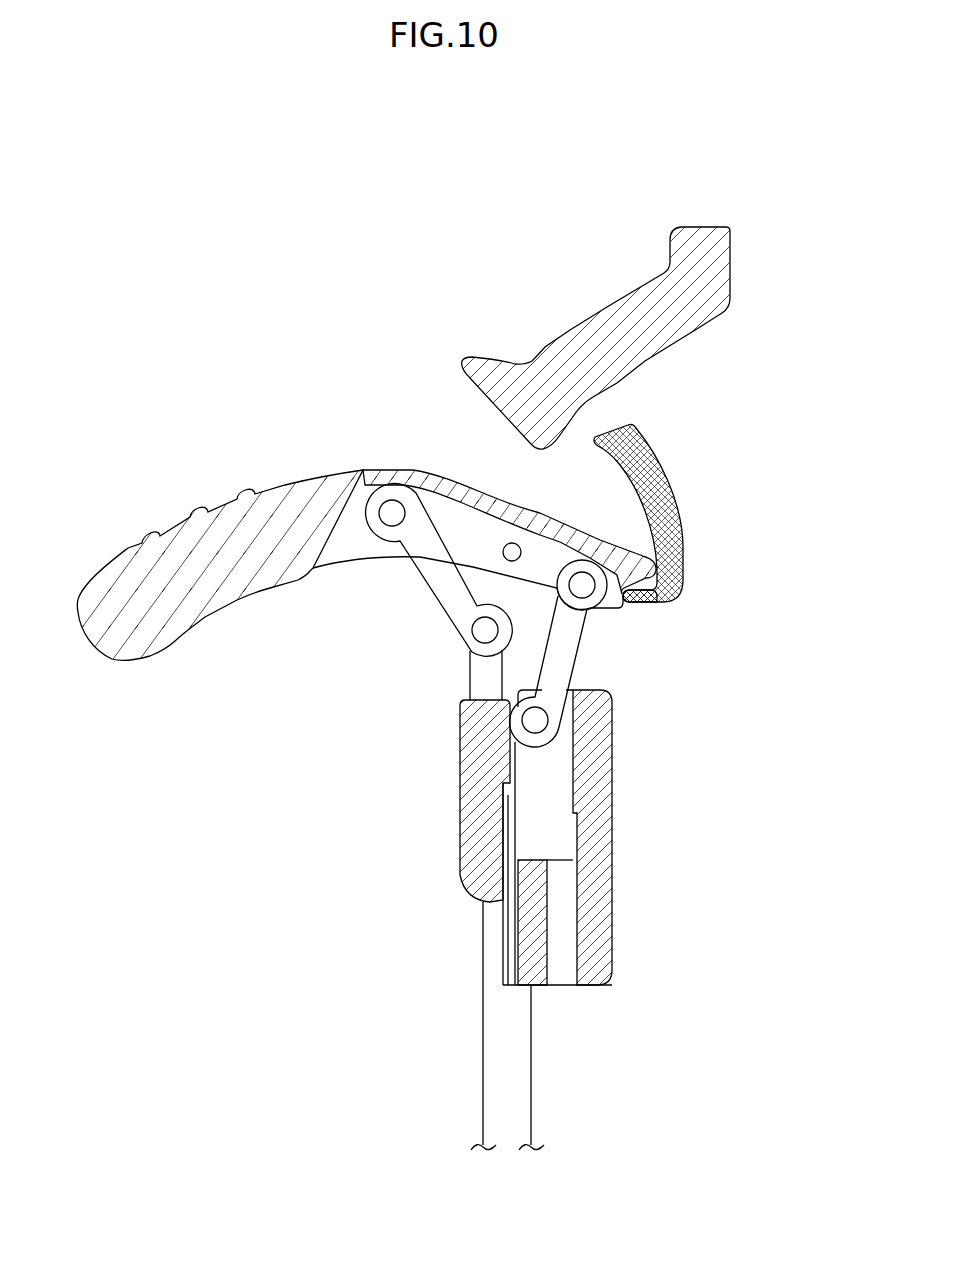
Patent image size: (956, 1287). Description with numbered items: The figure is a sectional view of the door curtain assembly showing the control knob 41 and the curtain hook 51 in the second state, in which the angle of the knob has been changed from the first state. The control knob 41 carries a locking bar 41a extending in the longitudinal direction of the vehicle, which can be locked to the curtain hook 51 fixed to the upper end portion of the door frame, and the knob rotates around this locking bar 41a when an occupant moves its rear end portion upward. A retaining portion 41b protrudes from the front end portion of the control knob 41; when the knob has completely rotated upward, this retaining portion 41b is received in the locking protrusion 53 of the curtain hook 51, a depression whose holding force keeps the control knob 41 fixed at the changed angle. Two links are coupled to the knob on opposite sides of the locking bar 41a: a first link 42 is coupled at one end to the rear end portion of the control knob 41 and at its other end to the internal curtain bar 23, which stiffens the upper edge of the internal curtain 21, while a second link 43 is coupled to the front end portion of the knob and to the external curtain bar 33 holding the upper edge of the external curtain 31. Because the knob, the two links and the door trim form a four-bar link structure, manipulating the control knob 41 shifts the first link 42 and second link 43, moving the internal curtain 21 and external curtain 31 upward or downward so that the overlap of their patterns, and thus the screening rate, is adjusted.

The internal curtain 21 is at (483, 1053).
The internal curtain bar 23 is at (466, 800).
The external curtain 31 is at (531, 1062).
The external curtain bar 33 is at (597, 890).
The control knob 41 is at (190, 557).
The locking bar 41a is at (510, 544).
The retaining portion 41b is at (683, 554).
The first link 42 is at (436, 583).
The second link 43 is at (565, 650).
The curtain hook 51 is at (660, 337).
The locking protrusion 53 is at (640, 605).